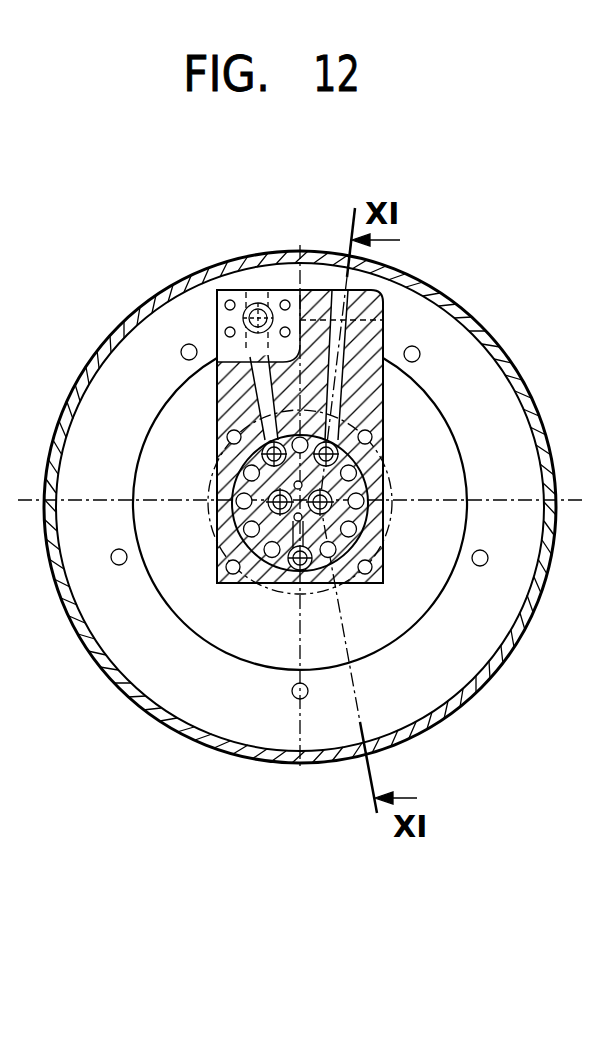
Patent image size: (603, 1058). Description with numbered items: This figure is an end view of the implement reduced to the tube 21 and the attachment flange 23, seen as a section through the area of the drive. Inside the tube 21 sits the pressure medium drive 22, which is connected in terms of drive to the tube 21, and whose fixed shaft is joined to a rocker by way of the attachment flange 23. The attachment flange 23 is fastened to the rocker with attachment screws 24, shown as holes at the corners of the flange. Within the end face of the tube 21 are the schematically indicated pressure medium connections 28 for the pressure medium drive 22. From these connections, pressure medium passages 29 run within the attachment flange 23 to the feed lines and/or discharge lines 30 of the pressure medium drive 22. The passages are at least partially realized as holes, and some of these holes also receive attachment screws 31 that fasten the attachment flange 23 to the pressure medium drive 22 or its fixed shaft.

The tube 21 is at (478, 688).
The pressure medium drive 22 is at (437, 470).
The attachment flange 23 is at (383, 345).
The attachment screws 24 is at (227, 436).
The pressure medium connections 28 is at (262, 303).
The pressure medium passages 29 is at (258, 393).
The feed lines and/or discharge lines 30 is at (268, 513).
The attachment screws 31 is at (261, 456).